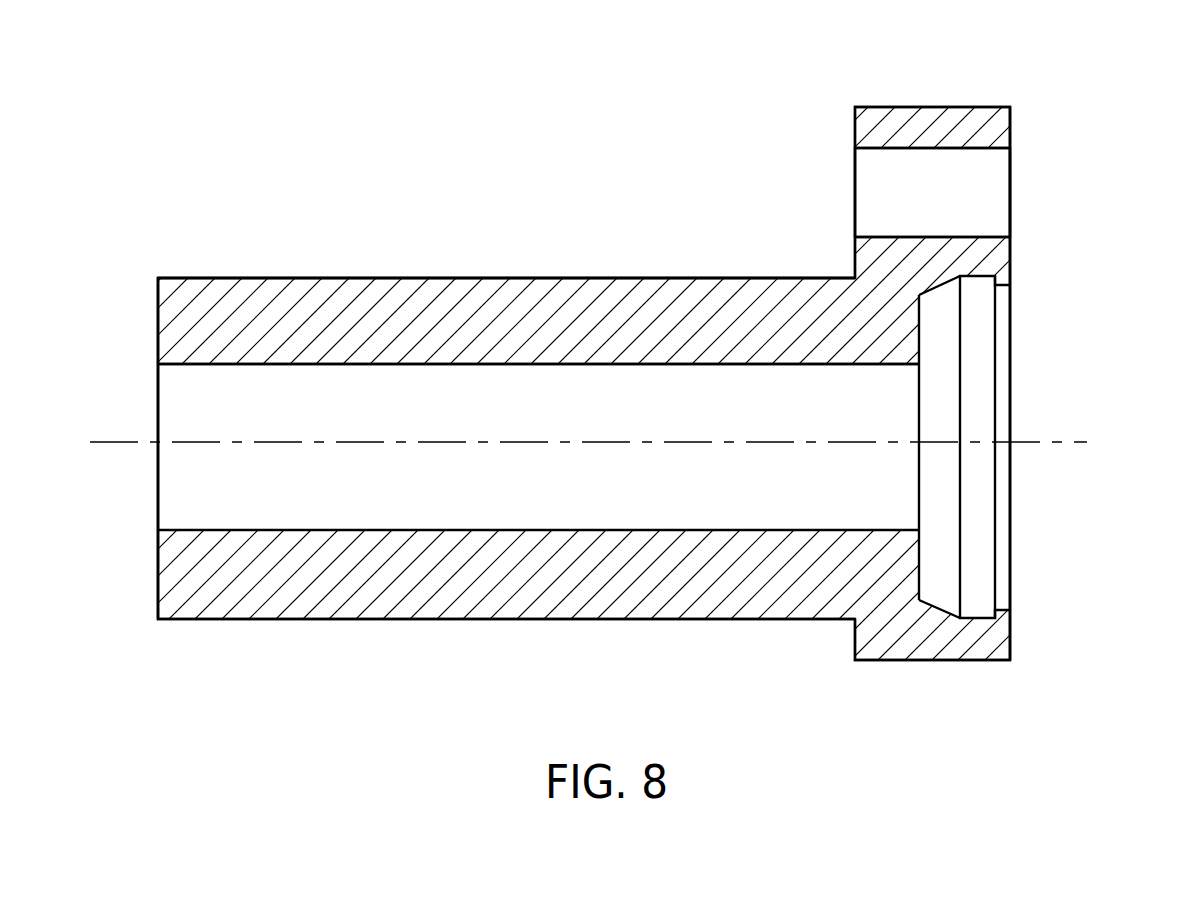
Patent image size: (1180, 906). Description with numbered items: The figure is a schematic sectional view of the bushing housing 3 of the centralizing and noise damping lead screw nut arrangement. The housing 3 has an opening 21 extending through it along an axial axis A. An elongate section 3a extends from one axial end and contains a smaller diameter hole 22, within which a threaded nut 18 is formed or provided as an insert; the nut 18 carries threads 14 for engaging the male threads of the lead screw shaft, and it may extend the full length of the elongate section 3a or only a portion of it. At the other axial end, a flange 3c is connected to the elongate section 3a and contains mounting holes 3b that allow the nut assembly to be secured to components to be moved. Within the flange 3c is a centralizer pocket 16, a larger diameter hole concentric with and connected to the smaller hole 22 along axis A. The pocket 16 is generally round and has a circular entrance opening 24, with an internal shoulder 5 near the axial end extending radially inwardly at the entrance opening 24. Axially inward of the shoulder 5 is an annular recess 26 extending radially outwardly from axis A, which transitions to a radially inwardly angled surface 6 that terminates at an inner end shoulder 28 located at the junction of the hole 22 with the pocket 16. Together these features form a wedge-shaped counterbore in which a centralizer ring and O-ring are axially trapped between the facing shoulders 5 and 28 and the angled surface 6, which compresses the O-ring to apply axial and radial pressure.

The bushing housing 3 is at (932, 356).
The flange 3c is at (905, 107).
The mounting holes 3b is at (854, 164).
The elongate section 3a is at (472, 278).
The threaded nut 18 is at (345, 292).
The smaller diameter hole 22 is at (538, 447).
The threads 14 is at (437, 365).
The opening 21 is at (176, 402).
The internal end shoulder 28 is at (918, 340).
The angled surface 6 is at (941, 286).
The annular recess 26 is at (977, 276).
The internal shoulder 5 is at (1003, 285).
The entrance opening 24 is at (1011, 558).
The centralizer pocket 16 is at (1128, 334).
The axial axis A is at (1052, 444).